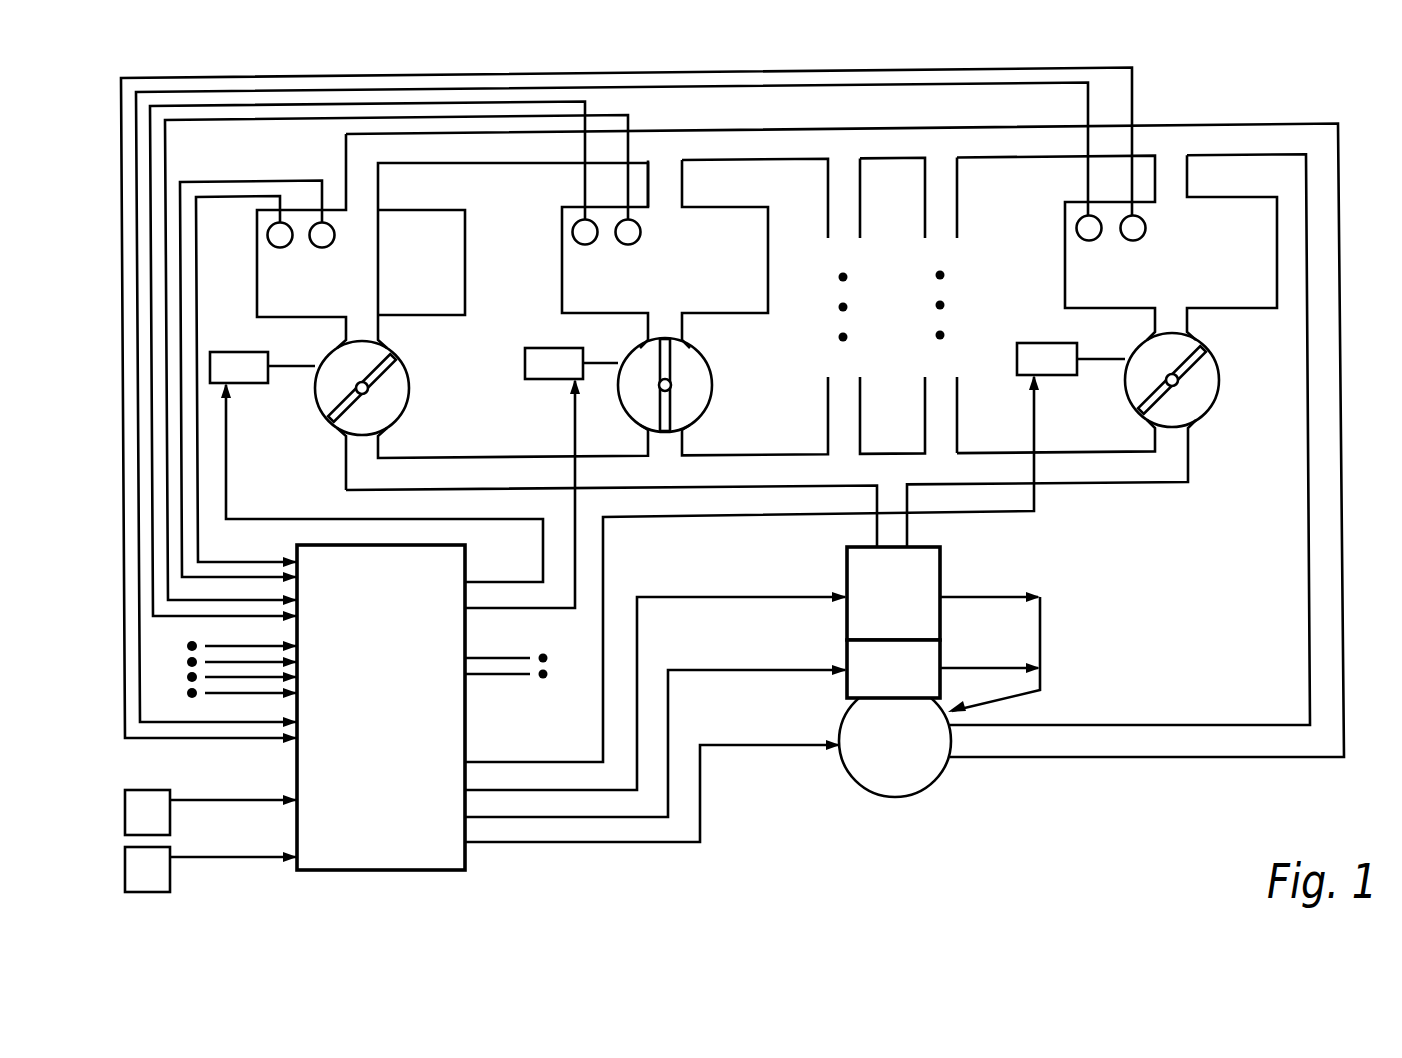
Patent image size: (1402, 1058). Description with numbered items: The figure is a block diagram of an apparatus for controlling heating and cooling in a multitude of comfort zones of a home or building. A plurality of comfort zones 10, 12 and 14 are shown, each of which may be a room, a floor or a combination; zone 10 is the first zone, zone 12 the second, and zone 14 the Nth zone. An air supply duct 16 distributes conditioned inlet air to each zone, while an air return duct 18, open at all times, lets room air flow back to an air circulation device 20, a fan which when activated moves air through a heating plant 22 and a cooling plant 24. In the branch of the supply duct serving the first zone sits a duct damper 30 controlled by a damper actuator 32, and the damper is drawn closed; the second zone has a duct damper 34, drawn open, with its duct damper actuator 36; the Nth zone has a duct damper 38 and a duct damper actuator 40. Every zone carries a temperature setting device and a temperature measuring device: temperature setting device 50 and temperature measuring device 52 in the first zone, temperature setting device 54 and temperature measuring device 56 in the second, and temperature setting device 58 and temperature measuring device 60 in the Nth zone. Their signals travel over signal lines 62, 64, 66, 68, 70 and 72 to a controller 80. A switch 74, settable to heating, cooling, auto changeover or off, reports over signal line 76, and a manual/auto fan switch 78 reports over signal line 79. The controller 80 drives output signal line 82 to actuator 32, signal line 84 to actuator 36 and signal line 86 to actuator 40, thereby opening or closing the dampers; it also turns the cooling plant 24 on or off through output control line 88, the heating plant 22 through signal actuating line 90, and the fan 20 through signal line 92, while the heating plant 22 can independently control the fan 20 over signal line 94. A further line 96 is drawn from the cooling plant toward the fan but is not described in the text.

The comfort zone 10 is at (435, 273).
The comfort zone 12 is at (738, 271).
The comfort zone 14 is at (1247, 268).
The air supply duct 16 is at (812, 411).
The air return duct 18 is at (1233, 123).
The air circulation device 20 is at (895, 798).
The heating plant 22 is at (846, 650).
The cooling plant 24 is at (846, 575).
The duct damper 30 is at (396, 421).
The damper actuator 32 is at (230, 352).
The duct damper 34 is at (699, 418).
The duct damper actuator 36 is at (534, 348).
The duct damper 38 is at (1206, 413).
The duct damper actuator 40 is at (1032, 343).
The temperature setting device 50 is at (280, 247).
The temperature measuring device 52 is at (322, 247).
The temperature setting device 54 is at (585, 244).
The temperature measuring device 56 is at (628, 244).
The temperature setting device 58 is at (1089, 240).
The temperature measuring device 60 is at (1133, 240).
The signal line 62 is at (196, 218).
The signal line 64 is at (180, 298).
The signal line 66 is at (165, 376).
The signal line 68 is at (150, 455).
The signal line 70 is at (138, 509).
The signal line 72 is at (124, 561).
The switch 74 is at (125, 805).
The signal line 76 is at (228, 802).
The manual/auto fan switch 78 is at (125, 860).
The signal line 79 is at (236, 860).
The controller 80 is at (376, 871).
The output signal line 82 is at (262, 518).
The signal line 84 is at (543, 560).
The signal line 86 is at (606, 558).
The output control line 88 is at (640, 640).
The signal actuating line 90 is at (672, 708).
The signal line 92 is at (702, 845).
The signal line 94 is at (1000, 592).
The output line 96 is at (977, 667).